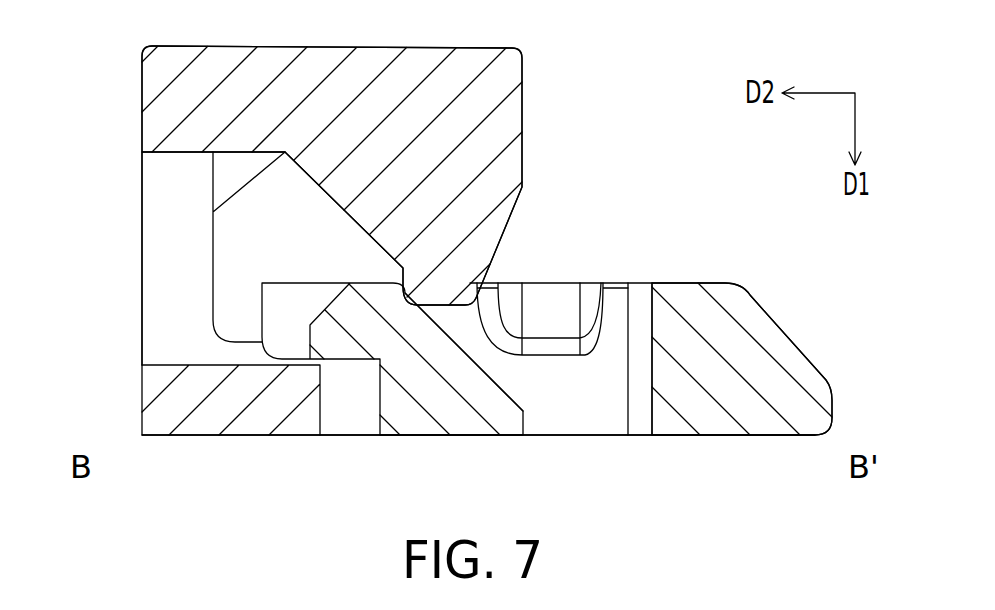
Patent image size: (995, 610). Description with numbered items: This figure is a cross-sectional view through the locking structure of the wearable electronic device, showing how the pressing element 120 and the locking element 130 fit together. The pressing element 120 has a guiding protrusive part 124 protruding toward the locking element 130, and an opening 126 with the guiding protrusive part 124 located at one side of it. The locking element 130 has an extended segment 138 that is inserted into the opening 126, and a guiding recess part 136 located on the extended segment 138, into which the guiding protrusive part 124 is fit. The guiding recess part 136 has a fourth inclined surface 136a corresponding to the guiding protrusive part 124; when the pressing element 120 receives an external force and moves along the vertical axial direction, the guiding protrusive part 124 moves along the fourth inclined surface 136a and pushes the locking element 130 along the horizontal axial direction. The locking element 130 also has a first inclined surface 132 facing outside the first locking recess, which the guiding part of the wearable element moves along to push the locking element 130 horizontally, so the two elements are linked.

The pressing element 120 is at (124, 38).
The guiding protrusive part 124 is at (513, 126).
The opening 126 is at (160, 261).
The extended segment 138 is at (352, 321).
The locking element 130 is at (719, 259).
The first inclined surface 132 is at (807, 335).
The guiding recess part 136 is at (617, 377).
The fourth inclined surface 136a is at (508, 377).